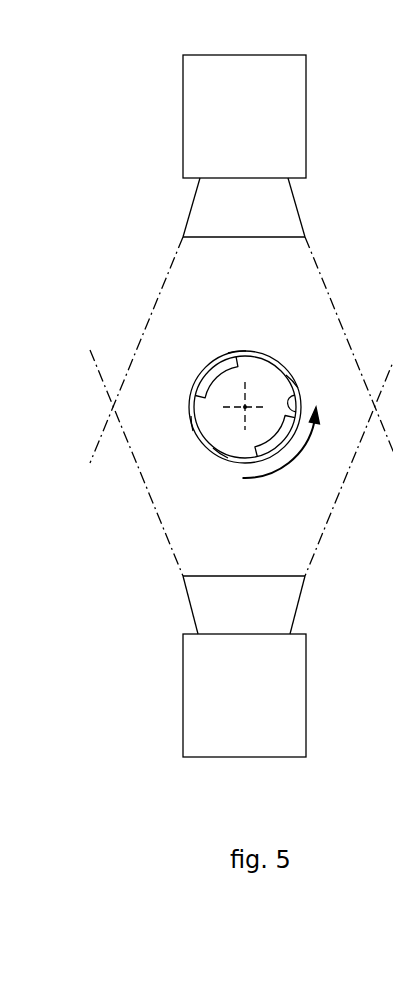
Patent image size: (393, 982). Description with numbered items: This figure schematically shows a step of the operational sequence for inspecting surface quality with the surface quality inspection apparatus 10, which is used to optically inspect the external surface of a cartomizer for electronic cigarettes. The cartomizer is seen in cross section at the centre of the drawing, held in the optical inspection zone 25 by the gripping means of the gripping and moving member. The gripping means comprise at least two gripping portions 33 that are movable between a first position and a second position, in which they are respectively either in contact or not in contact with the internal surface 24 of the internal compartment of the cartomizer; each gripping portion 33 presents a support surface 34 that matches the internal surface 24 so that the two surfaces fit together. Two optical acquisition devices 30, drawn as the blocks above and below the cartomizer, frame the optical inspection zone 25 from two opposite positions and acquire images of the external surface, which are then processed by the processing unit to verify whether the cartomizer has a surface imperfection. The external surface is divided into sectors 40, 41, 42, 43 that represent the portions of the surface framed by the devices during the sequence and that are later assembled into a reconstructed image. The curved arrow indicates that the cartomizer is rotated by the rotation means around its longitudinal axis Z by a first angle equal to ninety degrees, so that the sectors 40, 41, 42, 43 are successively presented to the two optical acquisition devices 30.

The surface quality inspection apparatus 10 is at (135, 203).
The optical inspection zone 25 is at (354, 333).
The optical acquisition device 30 is at (257, 80).
The support surface 34 is at (206, 358).
The longitudinal axis Z is at (245, 407).
The gripping portions 33 is at (205, 383).
The internal surface 24 is at (293, 408).
The sector 42 is at (237, 355).
The sector 43 is at (293, 382).
The sector 41 is at (195, 423).
The sector 40 is at (222, 453).